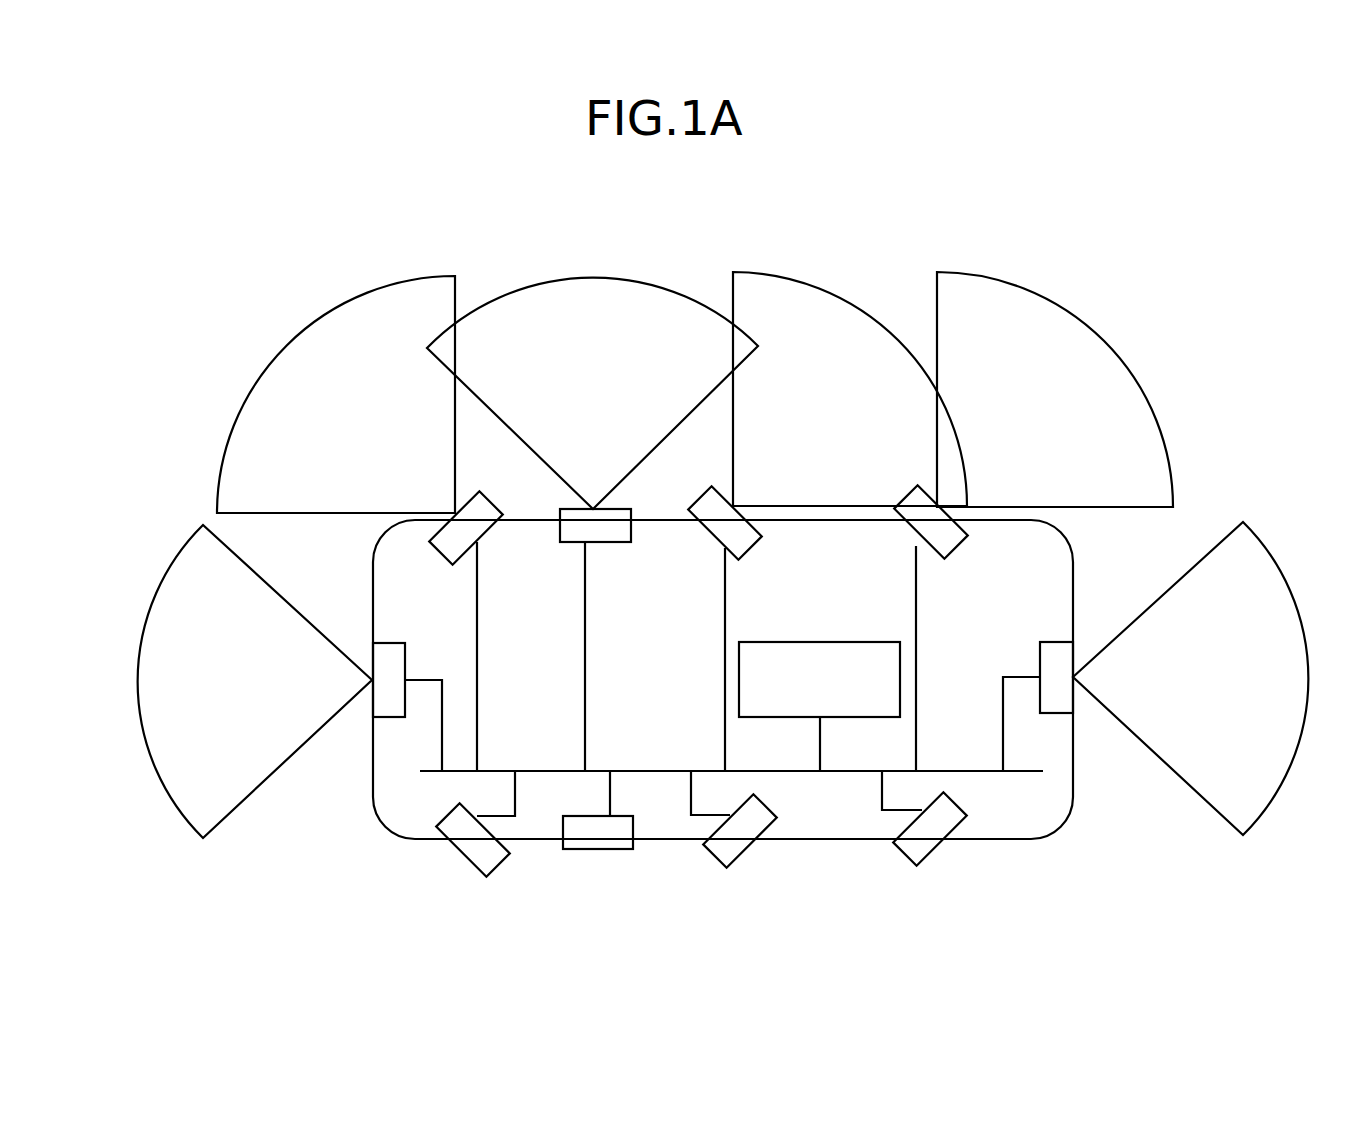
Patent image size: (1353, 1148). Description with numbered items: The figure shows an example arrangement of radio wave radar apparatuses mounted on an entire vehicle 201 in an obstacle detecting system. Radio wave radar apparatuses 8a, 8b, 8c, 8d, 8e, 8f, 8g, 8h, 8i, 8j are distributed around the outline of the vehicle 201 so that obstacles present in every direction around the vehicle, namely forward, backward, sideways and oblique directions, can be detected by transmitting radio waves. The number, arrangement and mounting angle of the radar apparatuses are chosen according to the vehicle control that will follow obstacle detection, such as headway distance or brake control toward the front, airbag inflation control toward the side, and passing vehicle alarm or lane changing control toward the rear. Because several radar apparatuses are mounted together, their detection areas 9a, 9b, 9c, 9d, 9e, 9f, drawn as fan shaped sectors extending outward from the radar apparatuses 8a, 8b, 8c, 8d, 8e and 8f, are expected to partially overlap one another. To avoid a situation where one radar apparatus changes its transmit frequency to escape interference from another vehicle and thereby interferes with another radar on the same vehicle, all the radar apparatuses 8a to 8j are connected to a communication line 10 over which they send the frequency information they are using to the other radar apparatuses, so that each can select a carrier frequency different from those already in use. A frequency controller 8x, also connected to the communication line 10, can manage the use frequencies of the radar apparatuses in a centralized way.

The vehicle 201 is at (1061, 832).
The communication line 10 is at (643, 768).
The detection area 9a is at (180, 551).
The detection area 9b is at (368, 278).
The detection area 9c is at (584, 274).
The detection area 9d is at (760, 276).
The detection area 9e is at (960, 276).
The detection area 9f is at (1178, 575).
The radio wave radar apparatus 8a is at (396, 642).
The radio wave radar apparatus 8b is at (492, 523).
The radio wave radar apparatus 8c is at (615, 543).
The radio wave radar apparatus 8d is at (748, 555).
The radio wave radar apparatus 8e is at (955, 555).
The radio wave radar apparatus 8f is at (1044, 641).
The radio wave radar apparatus 8g is at (935, 853).
The radio wave radar apparatus 8h is at (748, 857).
The radio wave radar apparatus 8i is at (596, 850).
The radio wave radar apparatus 8j is at (468, 860).
The frequency controller 8x is at (838, 641).